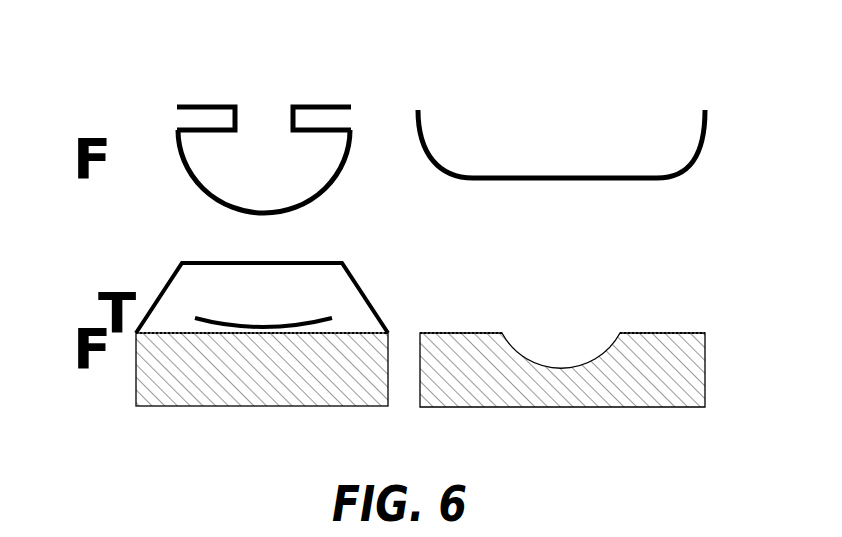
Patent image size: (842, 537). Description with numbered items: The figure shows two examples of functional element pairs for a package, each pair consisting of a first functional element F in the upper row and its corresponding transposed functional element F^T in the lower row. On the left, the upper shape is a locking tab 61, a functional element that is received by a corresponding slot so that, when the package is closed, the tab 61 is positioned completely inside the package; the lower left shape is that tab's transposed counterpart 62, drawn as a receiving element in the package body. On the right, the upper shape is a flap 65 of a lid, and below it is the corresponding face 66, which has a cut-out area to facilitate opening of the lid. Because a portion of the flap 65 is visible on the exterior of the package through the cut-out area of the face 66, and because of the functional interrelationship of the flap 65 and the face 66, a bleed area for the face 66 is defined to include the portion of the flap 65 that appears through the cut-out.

The locking tab 61 is at (259, 74).
The flap 65 is at (559, 74).
The inverse feature F^T of feature 61 62 is at (258, 424).
The face 66 is at (558, 424).